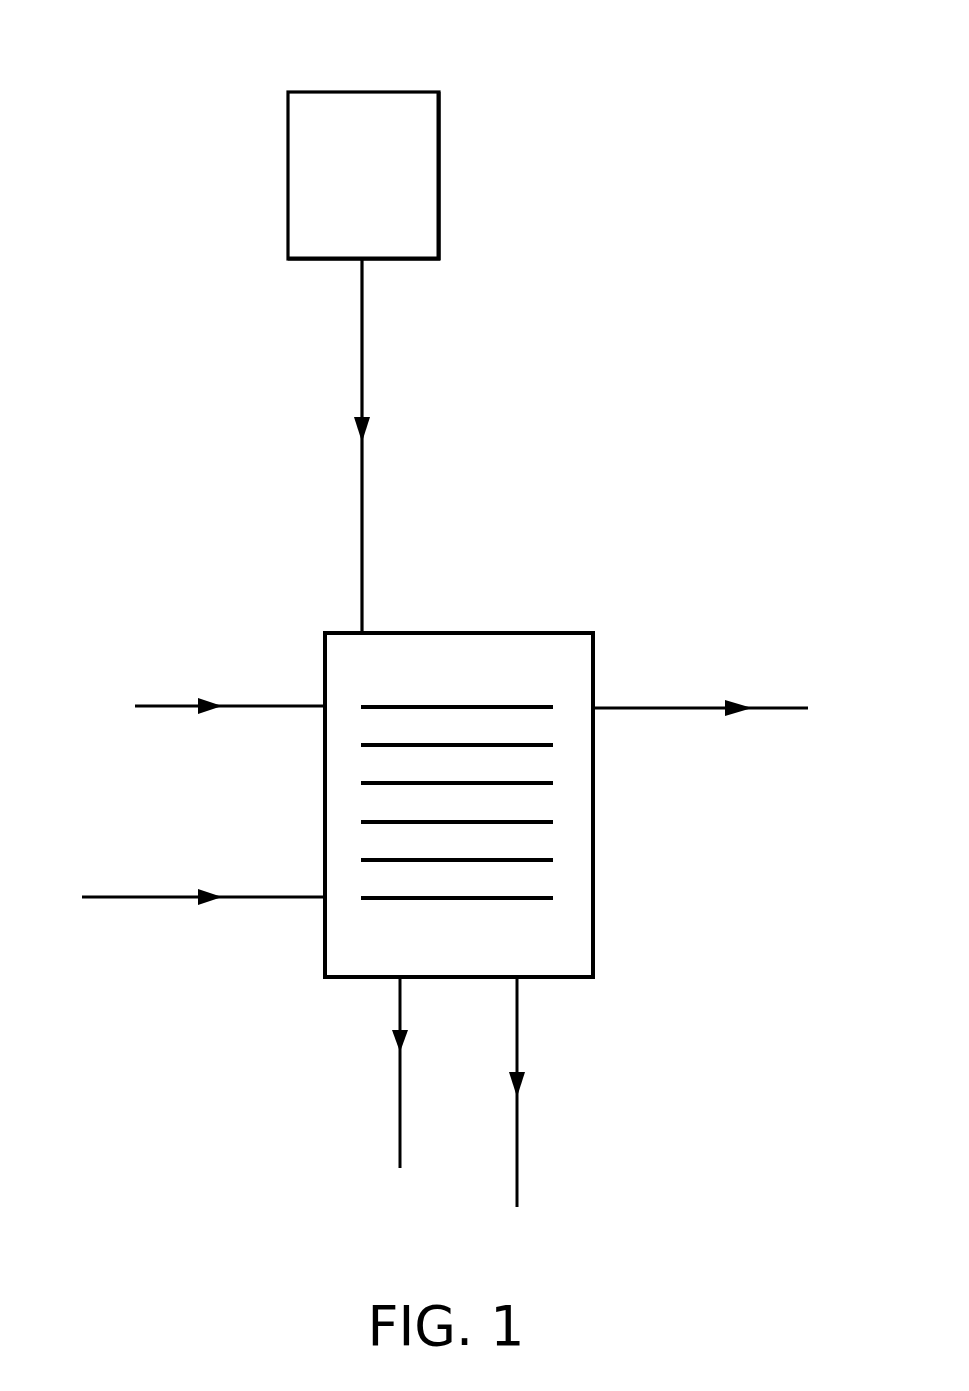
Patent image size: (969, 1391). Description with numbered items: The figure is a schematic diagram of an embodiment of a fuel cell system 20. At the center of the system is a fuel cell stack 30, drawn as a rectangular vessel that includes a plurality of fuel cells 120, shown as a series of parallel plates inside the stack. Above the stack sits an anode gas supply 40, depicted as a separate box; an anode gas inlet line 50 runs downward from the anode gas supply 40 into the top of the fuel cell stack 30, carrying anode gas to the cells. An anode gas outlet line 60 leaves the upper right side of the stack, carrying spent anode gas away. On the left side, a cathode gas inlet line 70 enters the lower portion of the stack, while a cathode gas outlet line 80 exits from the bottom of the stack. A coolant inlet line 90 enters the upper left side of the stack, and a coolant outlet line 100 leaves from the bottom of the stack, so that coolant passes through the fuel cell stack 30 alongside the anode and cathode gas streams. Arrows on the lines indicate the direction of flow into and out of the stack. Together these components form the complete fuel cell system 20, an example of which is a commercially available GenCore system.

The fuel cell system 20 is at (705, 995).
The fuel cell stack 30 is at (594, 856).
The anode gas supply 40 is at (357, 92).
The anode gas inlet line 50 is at (363, 366).
The anode gas outlet line 60 is at (648, 707).
The cathode gas inlet line 70 is at (120, 899).
The cathode gas outlet line 80 is at (399, 1100).
The coolant inlet line 90 is at (166, 708).
The coolant outlet line 100 is at (518, 1120).
The fuel cells 120 is at (553, 822).